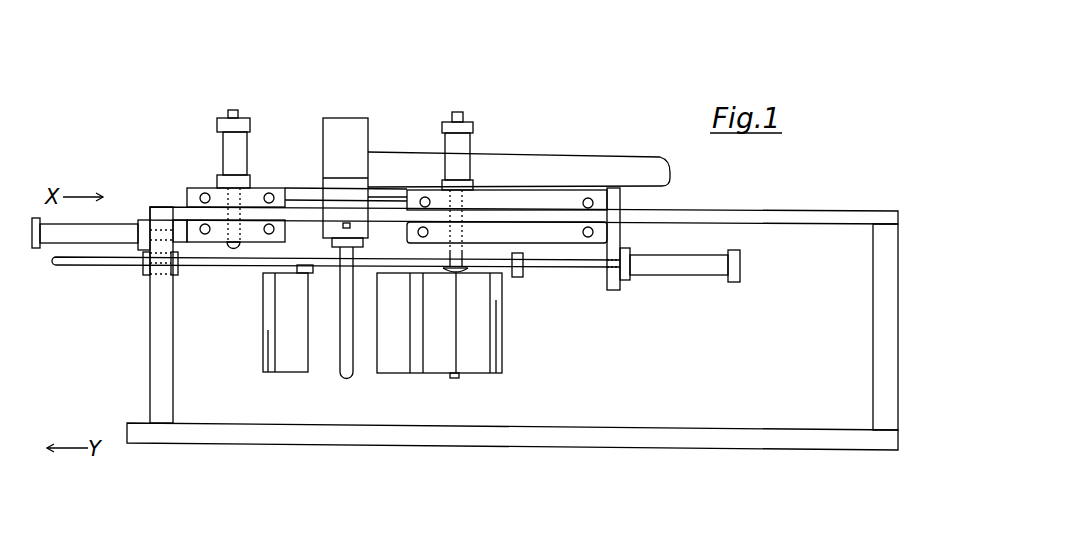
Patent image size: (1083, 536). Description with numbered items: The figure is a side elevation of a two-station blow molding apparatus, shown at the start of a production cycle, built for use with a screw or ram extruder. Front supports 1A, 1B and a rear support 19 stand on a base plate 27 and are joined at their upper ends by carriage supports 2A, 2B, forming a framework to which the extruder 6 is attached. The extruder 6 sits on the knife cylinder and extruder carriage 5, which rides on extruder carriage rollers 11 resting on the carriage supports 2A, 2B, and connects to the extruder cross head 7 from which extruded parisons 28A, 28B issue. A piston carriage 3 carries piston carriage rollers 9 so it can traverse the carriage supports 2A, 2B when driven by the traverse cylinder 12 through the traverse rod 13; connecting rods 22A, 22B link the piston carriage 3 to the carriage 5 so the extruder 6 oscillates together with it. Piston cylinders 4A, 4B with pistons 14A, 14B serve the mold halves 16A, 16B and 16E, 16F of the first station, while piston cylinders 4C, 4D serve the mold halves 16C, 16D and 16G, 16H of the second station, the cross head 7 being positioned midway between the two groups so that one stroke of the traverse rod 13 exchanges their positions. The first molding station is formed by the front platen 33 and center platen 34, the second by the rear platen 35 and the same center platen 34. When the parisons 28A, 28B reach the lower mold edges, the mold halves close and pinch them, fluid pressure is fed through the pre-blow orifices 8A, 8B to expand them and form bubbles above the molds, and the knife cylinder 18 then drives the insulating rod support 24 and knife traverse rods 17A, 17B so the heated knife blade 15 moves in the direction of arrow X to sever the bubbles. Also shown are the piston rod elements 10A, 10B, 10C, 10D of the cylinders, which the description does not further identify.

The front support 1A is at (486, 347).
The front support 1B is at (486, 347).
The carriage support 2A is at (524, 193).
The carriage support 2B is at (750, 217).
The piston carriage 3 is at (193, 200).
The piston cylinder 4A is at (186, 141).
The piston cylinder 4B is at (230, 158).
The piston cylinder 4C is at (503, 129).
The piston cylinder 4D is at (462, 148).
The knife cylinder and extruder carriage 5 is at (601, 205).
The extruder 6 is at (510, 167).
The extruder cross head 7 is at (350, 222).
The pre-blow orifice 8A is at (364, 104).
The pre-blow orifice 8B is at (362, 178).
The piston carriage roller 9 is at (270, 193).
The piston rod 10A is at (208, 153).
The piston rod 10B is at (232, 110).
The piston rod 10C is at (466, 165).
The piston rod 10D is at (455, 112).
The extruder carriage roller 11 is at (590, 195).
The traverse cylinder 12 is at (132, 233).
The traverse rod 13 is at (183, 238).
The piston 14A is at (210, 378).
The piston 14B is at (231, 252).
The knife blade 15 is at (268, 370).
The mold half 16A is at (303, 388).
The mold half 16B is at (426, 388).
The mold half 16C is at (437, 388).
The mold half 16D is at (490, 388).
The mold half 16E is at (292, 363).
The mold half 16F is at (392, 362).
The mold half 16G is at (432, 365).
The mold half 16H is at (478, 365).
The knife traverse rod 17A is at (561, 347).
The knife traverse rod 17B is at (503, 265).
The knife cylinder 18 is at (673, 273).
The rear support 19 is at (885, 255).
The connecting rod 22A is at (433, 104).
The connecting rod 22B is at (370, 197).
The rod support 24 is at (518, 277).
The base plate 27 is at (162, 355).
The extruded parison 28A is at (337, 209).
The extruded parison 28B is at (345, 310).
The front platen 33 is at (297, 273).
The center platen 34 is at (410, 365).
The rear platen 35 is at (500, 348).